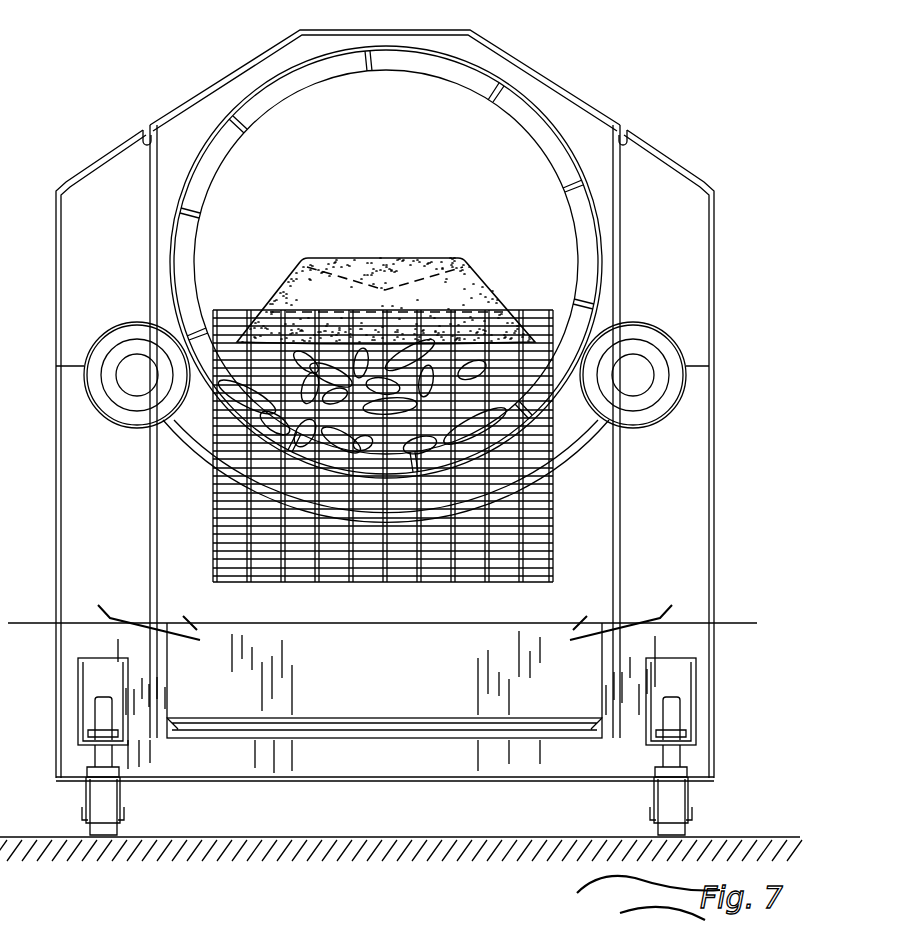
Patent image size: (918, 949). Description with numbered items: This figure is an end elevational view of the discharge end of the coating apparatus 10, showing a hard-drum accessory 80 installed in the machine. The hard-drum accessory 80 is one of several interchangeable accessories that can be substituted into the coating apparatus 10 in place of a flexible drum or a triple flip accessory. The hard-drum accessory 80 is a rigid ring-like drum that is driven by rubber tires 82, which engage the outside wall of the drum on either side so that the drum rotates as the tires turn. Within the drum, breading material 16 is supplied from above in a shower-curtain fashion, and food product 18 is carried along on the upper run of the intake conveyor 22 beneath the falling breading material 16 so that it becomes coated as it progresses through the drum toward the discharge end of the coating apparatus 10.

The coating apparatus 10 is at (172, 72).
The breading material 16 is at (480, 285).
The food product 18 is at (209, 390).
The intake conveyor 22 is at (553, 548).
The hard-drum accessory 80 is at (553, 115).
The rubber tires 82 is at (650, 410).